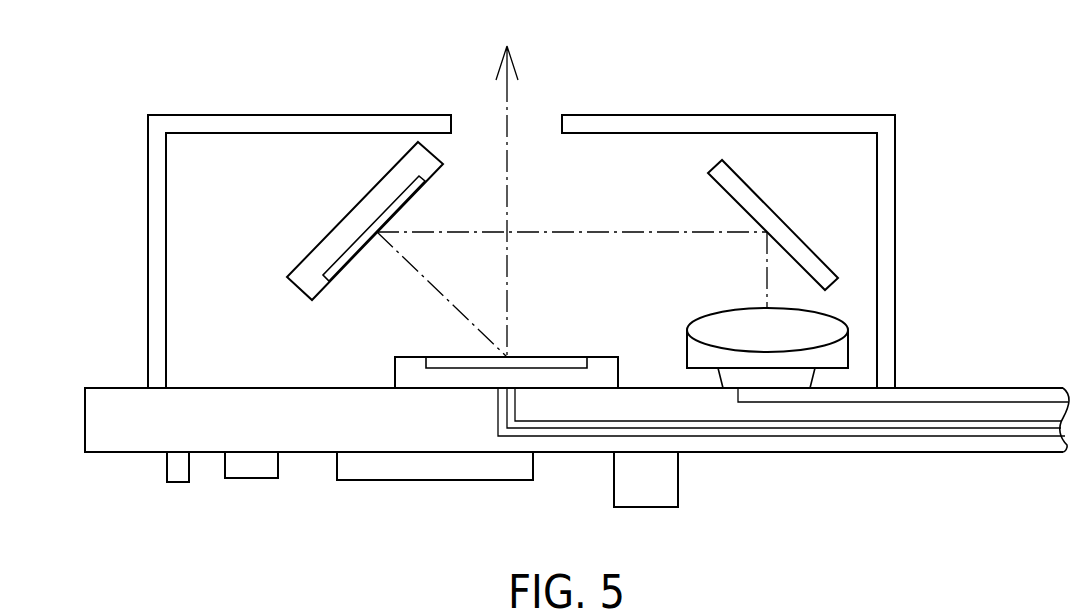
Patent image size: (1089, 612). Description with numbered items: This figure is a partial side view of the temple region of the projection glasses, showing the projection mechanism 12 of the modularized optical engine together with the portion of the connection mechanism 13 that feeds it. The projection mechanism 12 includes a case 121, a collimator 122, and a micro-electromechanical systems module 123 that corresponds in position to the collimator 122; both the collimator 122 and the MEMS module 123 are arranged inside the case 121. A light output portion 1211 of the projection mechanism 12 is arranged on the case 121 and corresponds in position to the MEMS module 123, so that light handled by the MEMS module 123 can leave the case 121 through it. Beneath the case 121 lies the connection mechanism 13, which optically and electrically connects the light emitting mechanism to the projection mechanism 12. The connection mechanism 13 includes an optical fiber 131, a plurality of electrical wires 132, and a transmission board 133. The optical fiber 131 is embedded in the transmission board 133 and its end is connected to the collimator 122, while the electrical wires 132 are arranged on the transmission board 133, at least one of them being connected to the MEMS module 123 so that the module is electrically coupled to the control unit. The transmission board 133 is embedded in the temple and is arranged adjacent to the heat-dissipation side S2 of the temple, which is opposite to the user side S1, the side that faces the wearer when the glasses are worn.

The projection mechanism 12 is at (521, 198).
The case 121 is at (745, 127).
The light output portion 1211 is at (484, 110).
The collimator 122 is at (830, 332).
The micro-electromechanical systems (MEMS) module 123 is at (602, 350).
The connection mechanism 13 is at (577, 479).
The optical fiber 131 is at (988, 395).
The electrical wires 132 is at (912, 430).
The transmission board 133 is at (1030, 523).
The user side S1 is at (209, 86).
The heat-dissipation side S2 is at (207, 513).